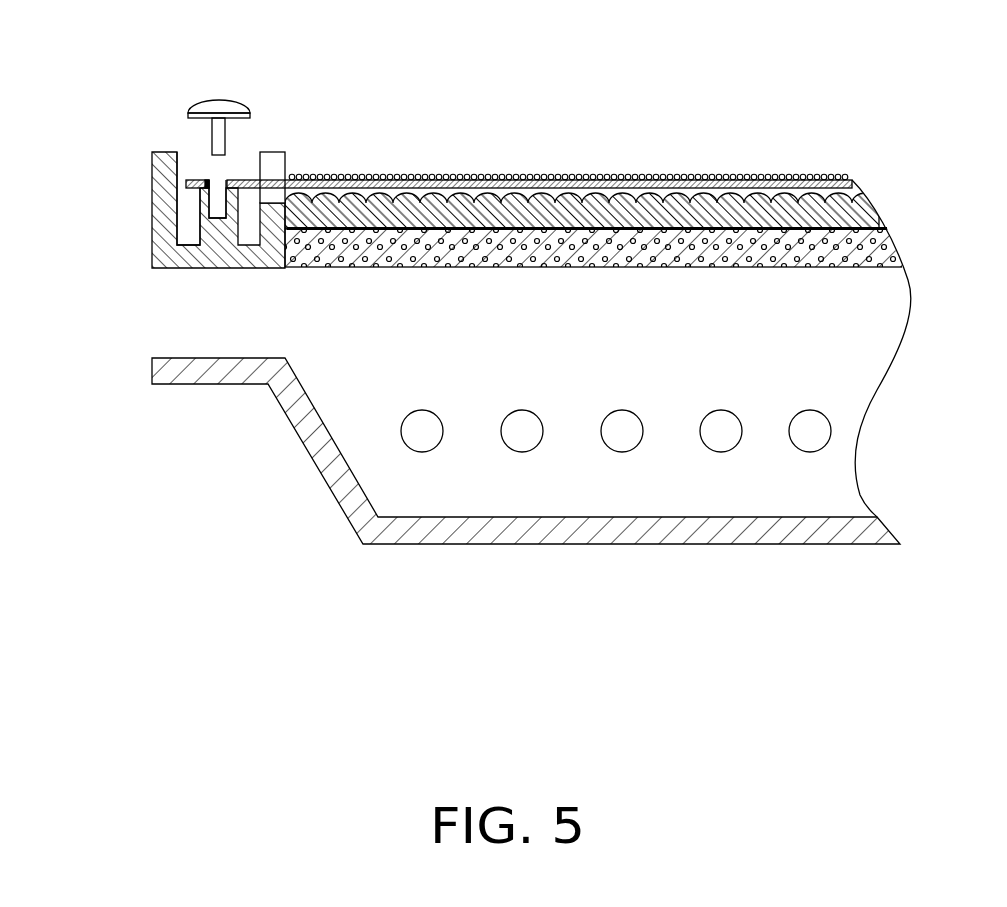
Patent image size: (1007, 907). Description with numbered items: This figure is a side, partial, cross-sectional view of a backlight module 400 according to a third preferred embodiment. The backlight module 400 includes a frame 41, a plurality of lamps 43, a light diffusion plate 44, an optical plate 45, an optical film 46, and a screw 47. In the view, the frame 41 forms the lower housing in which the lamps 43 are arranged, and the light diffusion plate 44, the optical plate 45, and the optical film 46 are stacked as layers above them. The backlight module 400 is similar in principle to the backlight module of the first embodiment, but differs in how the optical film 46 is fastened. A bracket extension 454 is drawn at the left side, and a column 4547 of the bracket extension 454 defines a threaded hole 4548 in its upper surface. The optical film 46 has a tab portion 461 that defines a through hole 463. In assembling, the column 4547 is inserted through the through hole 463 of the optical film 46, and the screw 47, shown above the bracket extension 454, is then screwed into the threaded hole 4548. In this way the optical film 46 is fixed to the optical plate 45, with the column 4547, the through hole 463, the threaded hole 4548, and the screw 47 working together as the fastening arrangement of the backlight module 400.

The backlight module 400 is at (544, 42).
The frame 41 is at (658, 532).
The lamps 43 is at (810, 438).
The light diffusion plate 44 is at (890, 243).
The optical plate 45 is at (858, 208).
The optical film 46 is at (853, 182).
The tab portion 461 is at (242, 183).
The through hole 463 is at (205, 182).
The screw 47 is at (223, 108).
The bracket extension 454 is at (213, 268).
The column 4547 is at (178, 233).
The threaded hole 4548 is at (210, 185).